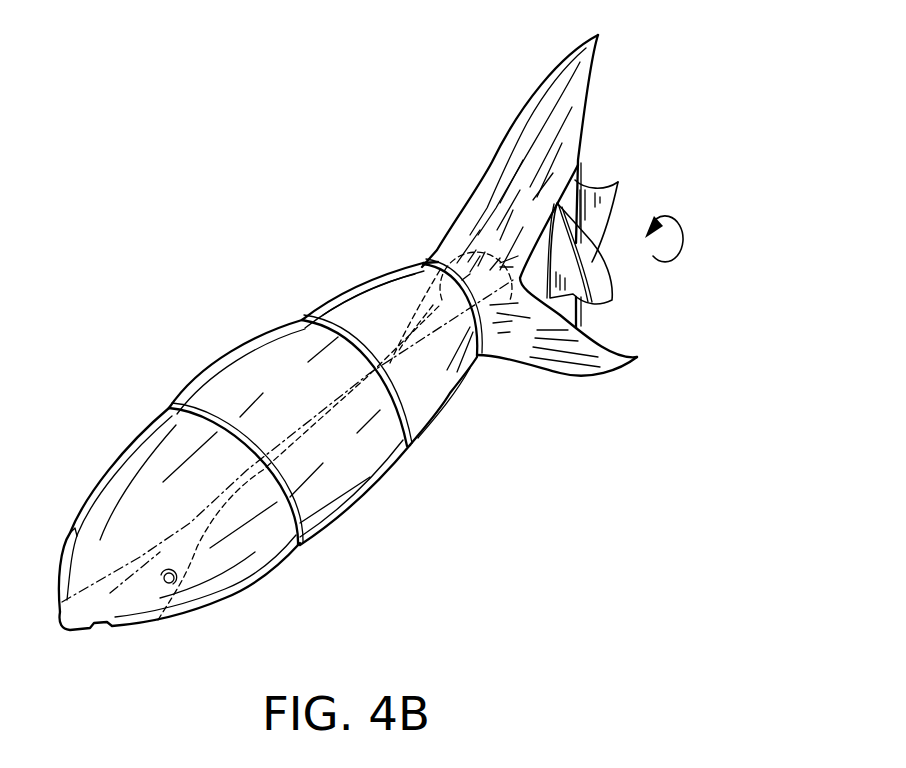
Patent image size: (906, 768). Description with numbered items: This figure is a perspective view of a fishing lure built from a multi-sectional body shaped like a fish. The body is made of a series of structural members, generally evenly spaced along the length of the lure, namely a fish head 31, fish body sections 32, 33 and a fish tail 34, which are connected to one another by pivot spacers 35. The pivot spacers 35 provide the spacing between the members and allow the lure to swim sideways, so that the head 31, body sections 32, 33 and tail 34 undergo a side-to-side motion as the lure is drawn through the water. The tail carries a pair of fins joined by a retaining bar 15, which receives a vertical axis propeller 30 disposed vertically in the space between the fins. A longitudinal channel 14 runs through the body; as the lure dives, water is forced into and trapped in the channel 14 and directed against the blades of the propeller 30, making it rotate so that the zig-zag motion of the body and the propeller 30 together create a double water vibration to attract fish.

The longitudinal channel 14 is at (410, 347).
The retaining bar 15 is at (583, 163).
The vertical axis propeller 30 is at (613, 287).
The fish head 31 is at (262, 580).
The fish body 32 is at (367, 500).
The fish body 33 is at (452, 395).
The fish tail 34 is at (492, 167).
The pivot spacers 35 is at (169, 408).